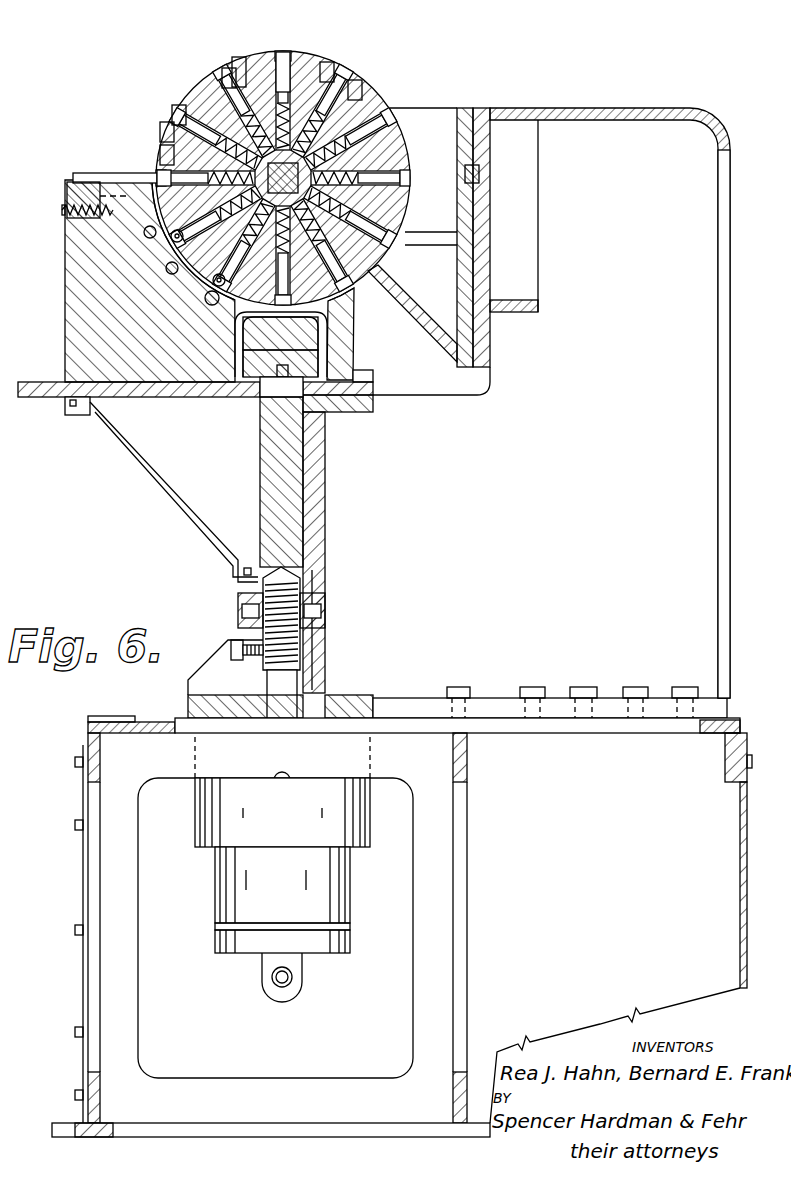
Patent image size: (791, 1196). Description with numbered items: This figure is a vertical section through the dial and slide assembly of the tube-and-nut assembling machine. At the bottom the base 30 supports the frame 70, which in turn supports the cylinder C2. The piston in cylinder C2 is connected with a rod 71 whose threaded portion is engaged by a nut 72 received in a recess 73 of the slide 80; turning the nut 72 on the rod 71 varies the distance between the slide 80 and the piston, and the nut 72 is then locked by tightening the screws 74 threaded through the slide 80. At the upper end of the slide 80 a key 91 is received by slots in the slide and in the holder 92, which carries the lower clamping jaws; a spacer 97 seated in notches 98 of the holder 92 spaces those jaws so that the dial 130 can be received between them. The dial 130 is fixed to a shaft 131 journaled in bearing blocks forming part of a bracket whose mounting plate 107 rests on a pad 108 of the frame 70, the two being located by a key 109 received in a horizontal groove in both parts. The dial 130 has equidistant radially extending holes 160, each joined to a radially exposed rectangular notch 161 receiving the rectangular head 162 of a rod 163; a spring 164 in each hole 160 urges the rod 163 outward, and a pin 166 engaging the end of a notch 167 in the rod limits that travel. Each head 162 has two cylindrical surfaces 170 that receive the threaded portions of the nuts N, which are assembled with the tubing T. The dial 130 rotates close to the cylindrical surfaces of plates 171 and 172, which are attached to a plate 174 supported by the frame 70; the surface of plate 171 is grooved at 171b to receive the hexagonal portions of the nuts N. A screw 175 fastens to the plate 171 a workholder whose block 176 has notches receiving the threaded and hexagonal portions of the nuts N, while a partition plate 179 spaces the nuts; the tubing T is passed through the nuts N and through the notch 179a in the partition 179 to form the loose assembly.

The base 30 is at (85, 735).
The frame 70 is at (325, 542).
The rod 71 is at (288, 677).
The nut 72 is at (325, 606).
The recess 73 is at (293, 585).
The screws 74 is at (245, 655).
The slide 80 is at (272, 477).
The key 91 is at (293, 367).
The holder 92 is at (313, 347).
The spacer 97 is at (310, 327).
The notches 98 is at (237, 387).
The mounting plate 107 is at (465, 340).
The pad 108 is at (482, 296).
The key 109 is at (475, 175).
The dial 130 is at (198, 82).
The shaft 131 is at (300, 166).
The radially extending holes 160 is at (360, 90).
The rectangular notch 161 is at (168, 130).
The rectangular head 162 is at (287, 54).
The rod 163 is at (235, 75).
The spring 164 is at (333, 72).
The pin 166 is at (170, 153).
The notch 167 is at (237, 49).
The cylindrical surfaces 170 is at (183, 113).
The plate 171 is at (72, 344).
The groove 171b is at (206, 283).
The plate 172 is at (357, 377).
The plate 174 is at (46, 397).
The screw 175 is at (62, 212).
The block 176 is at (67, 227).
The partition plate 179 is at (66, 200).
The notch 179a is at (86, 185).
The tubing T is at (168, 247).
The nuts N is at (182, 237).
The cylinder C2 is at (350, 893).